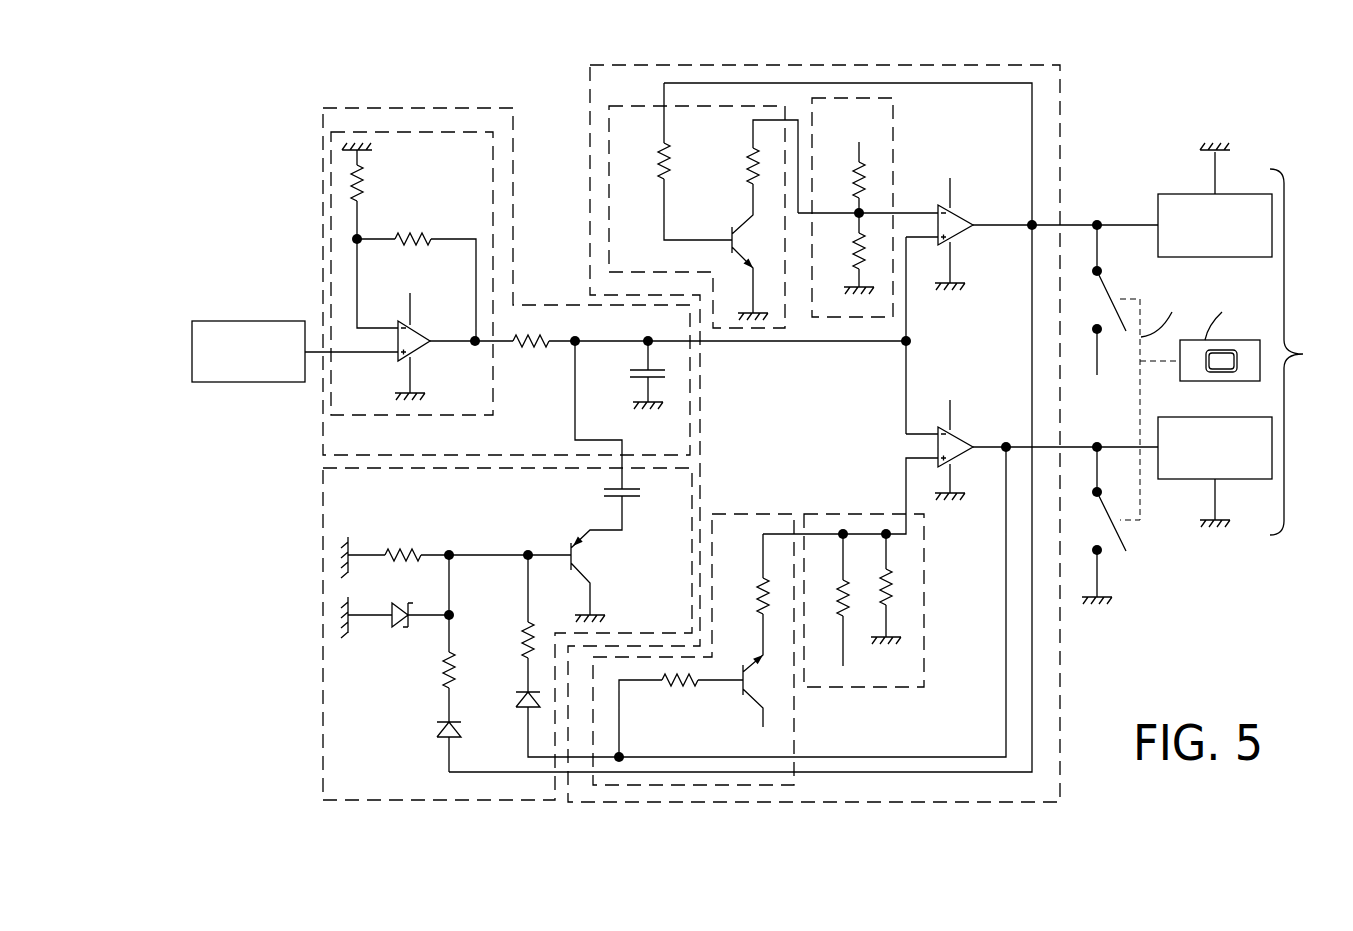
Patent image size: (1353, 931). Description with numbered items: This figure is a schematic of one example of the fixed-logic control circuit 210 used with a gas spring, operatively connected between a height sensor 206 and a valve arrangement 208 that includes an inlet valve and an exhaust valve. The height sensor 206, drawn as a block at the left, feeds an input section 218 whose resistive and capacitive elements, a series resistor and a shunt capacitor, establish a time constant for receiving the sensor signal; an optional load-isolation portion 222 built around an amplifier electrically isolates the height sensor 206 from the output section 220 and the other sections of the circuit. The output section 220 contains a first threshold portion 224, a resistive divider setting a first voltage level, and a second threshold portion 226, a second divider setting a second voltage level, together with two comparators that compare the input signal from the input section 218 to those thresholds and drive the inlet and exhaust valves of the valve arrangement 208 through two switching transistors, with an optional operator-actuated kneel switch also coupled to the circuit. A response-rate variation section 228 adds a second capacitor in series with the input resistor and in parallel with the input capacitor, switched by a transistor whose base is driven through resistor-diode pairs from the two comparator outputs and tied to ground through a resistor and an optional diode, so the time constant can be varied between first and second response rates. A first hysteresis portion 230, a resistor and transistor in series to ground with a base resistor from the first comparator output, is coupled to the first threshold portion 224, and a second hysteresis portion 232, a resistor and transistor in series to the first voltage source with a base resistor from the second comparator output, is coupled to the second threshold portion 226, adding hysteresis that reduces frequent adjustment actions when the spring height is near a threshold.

The height sensor 206 is at (282, 385).
The valve arrangement 208 is at (1308, 336).
The fixed-logic control circuit 210 is at (270, 206).
The input section 218 is at (428, 105).
The output section 220 is at (928, 64).
The load-isolation portion 222 is at (398, 130).
The first threshold portion 224 is at (893, 112).
The second threshold portion 226 is at (853, 690).
The response-rate variation section 228 is at (320, 612).
The first hysteresis portion 230 is at (722, 105).
The second hysteresis portion 232 is at (735, 790).